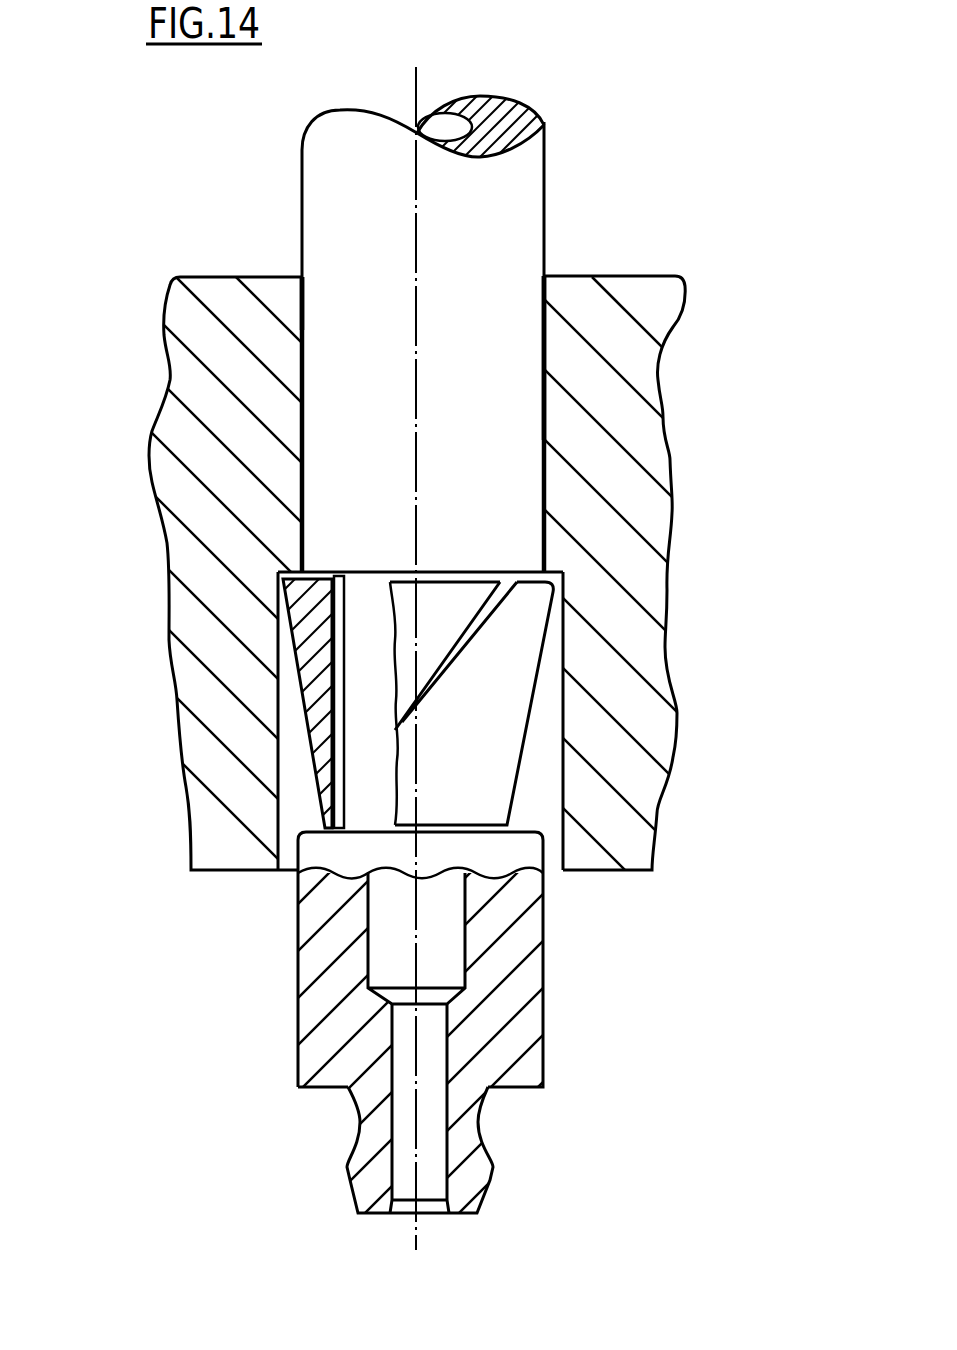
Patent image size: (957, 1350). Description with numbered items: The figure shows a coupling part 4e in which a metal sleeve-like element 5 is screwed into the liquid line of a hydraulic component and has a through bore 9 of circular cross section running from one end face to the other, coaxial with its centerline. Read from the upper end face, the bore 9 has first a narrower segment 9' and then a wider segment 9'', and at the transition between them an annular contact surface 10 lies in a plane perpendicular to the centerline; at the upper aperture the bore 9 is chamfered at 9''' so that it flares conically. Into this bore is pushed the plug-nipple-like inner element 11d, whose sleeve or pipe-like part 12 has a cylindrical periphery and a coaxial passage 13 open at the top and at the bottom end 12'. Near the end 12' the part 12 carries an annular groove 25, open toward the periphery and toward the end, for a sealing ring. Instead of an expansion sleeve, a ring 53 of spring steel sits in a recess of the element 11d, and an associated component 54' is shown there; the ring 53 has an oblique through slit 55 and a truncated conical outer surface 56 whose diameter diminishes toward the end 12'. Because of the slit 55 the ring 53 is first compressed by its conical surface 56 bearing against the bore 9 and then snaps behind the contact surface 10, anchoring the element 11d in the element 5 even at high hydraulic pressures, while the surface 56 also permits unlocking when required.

The coupling part 4e is at (710, 557).
The sleeve-like element 5 is at (637, 481).
The through bore 9 is at (542, 424).
The bore segment 9' is at (663, 350).
The bore segment 9'' is at (666, 742).
The chamfer 9''' is at (175, 285).
The annular contact surface 10 is at (275, 570).
The inner element 11d is at (660, 133).
The part 12 is at (543, 183).
The bottom end 12' is at (456, 1156).
The passage 13 is at (393, 950).
The annular groove 25 is at (338, 1127).
The ring 53 is at (561, 707).
The plate 54' is at (217, 794).
The slit 55 is at (444, 687).
The truncated conical outer surface 56 is at (317, 790).